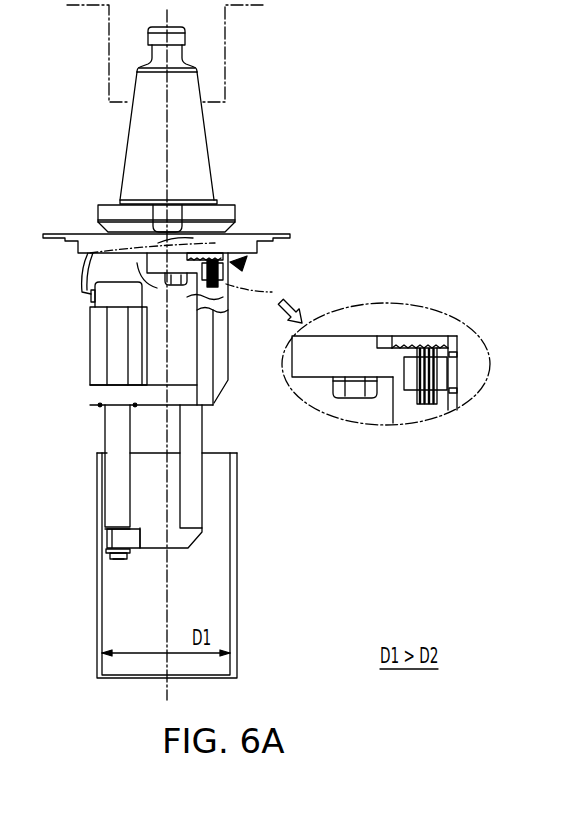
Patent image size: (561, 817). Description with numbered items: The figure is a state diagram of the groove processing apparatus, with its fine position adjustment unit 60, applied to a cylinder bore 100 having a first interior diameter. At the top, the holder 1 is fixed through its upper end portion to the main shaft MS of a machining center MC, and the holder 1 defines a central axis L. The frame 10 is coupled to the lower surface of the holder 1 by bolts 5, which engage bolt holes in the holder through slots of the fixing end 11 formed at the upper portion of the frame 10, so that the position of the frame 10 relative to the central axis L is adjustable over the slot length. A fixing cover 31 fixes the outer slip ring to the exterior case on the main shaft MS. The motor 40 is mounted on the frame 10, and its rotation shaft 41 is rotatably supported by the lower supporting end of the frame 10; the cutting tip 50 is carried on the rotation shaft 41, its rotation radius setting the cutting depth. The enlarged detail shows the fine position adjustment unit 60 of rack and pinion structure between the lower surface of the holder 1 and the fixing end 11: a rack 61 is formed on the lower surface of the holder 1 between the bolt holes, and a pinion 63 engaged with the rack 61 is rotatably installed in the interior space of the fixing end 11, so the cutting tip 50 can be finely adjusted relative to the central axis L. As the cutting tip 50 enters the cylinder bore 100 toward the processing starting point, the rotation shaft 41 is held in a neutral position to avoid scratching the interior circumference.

The holder 1 is at (138, 179).
The central axis L is at (168, 140).
The main shaft MS is at (121, 78).
The machining center MC is at (251, 6).
The bolt 5 is at (178, 287).
The frame 10 is at (192, 428).
The fixing end 11 is at (345, 340).
The fixing cover 31 is at (243, 238).
The motor 40 is at (115, 350).
The rotation shaft 41 is at (112, 487).
The cutting tip 50 is at (104, 558).
The fine position adjustment unit 60 is at (245, 263).
The rack 61 is at (408, 340).
The pinion 63 is at (432, 405).
The cylinder bore 100 is at (232, 570).